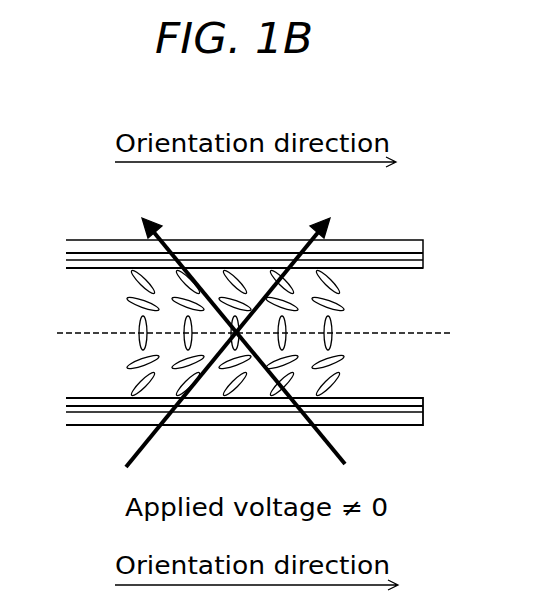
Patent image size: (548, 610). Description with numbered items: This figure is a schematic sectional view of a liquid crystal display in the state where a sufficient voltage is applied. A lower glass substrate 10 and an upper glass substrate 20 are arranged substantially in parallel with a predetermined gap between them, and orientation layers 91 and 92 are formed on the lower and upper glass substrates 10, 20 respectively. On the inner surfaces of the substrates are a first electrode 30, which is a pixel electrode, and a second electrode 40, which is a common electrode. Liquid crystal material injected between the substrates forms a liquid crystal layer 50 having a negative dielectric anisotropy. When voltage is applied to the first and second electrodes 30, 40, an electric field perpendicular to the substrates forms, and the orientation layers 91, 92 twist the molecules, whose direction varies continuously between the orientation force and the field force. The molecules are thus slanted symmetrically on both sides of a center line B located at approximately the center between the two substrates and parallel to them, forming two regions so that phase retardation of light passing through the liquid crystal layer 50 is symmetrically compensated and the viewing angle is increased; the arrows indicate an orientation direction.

The lower glass substrate 10 is at (268, 441).
The upper glass substrate 20 is at (268, 229).
The first electrode 30 is at (419, 412).
The second electrode 40 is at (417, 253).
The liquid crystal layer 50 is at (422, 408).
The orientation layer 91 is at (198, 423).
The orientation layer 92 is at (197, 254).
The center line B is at (264, 332).